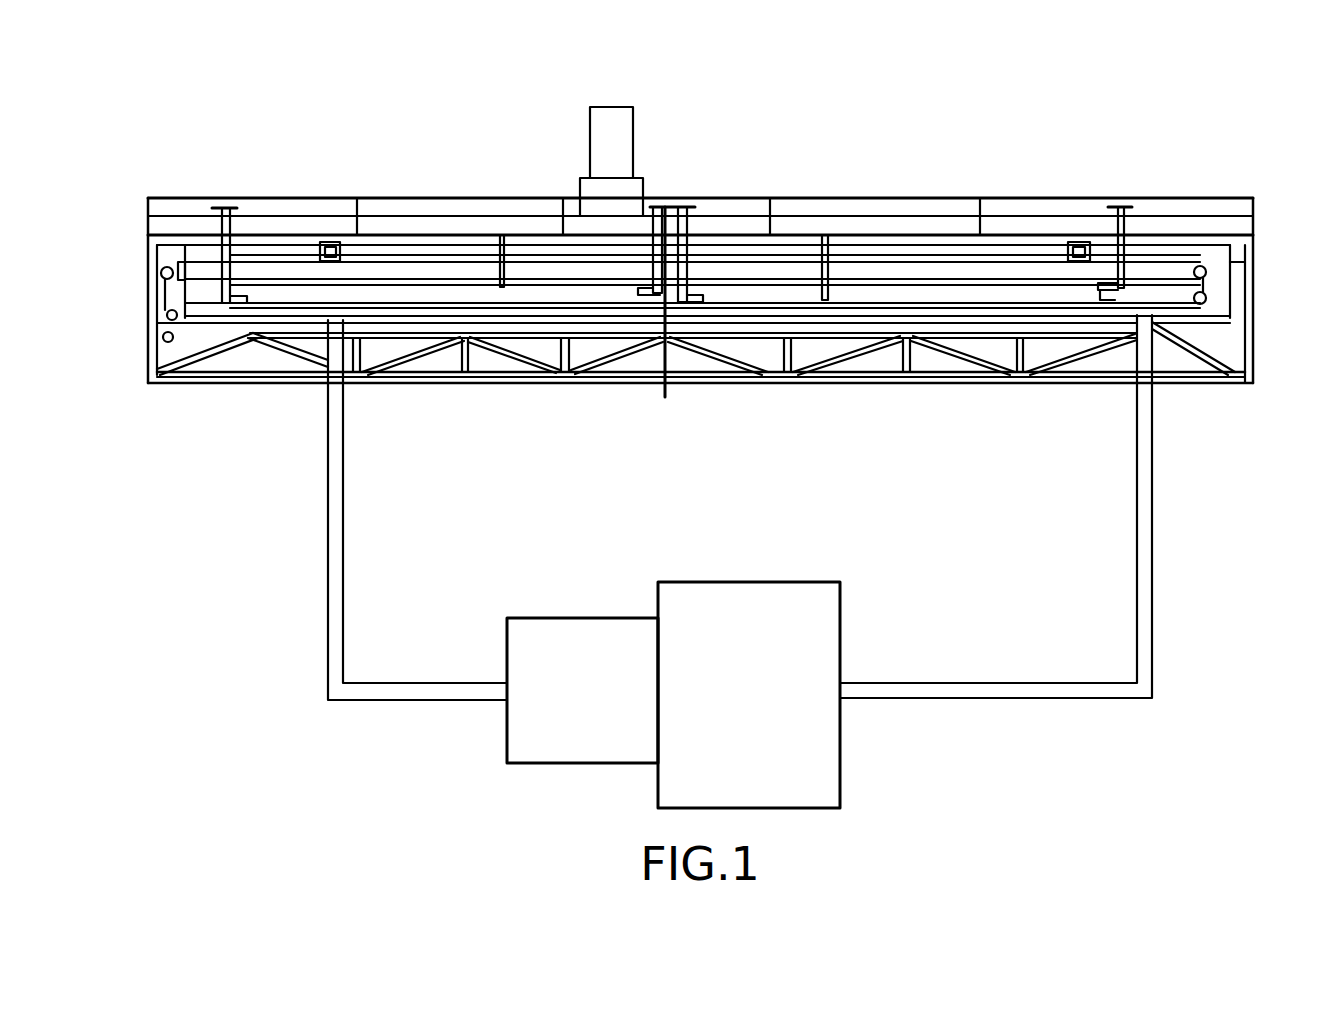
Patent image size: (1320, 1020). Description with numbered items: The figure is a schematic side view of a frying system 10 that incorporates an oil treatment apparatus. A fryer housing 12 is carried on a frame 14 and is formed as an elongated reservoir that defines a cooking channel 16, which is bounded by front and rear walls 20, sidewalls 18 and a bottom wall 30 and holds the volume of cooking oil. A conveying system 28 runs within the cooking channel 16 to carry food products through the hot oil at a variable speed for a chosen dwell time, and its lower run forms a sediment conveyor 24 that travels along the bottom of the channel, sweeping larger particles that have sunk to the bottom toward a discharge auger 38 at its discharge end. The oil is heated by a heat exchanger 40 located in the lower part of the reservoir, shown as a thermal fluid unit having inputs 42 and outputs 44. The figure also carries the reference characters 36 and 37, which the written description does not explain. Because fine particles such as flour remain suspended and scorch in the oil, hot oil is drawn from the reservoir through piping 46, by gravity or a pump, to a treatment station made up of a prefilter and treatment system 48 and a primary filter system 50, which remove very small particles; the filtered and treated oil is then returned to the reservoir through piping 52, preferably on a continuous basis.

The frying system 10 is at (385, 183).
The fryer housing 12 is at (900, 322).
The frame 14 is at (386, 381).
The cooking channel 16 is at (176, 297).
The sidewalls 18 is at (1212, 250).
The front and rear walls 20 is at (155, 258).
The sediment conveyor 24 is at (630, 302).
The conveying system 28 is at (412, 246).
The bottom wall 30 is at (225, 322).
The top plate 36 is at (935, 196).
The column 37 is at (590, 128).
The discharge auger 38 is at (170, 345).
The heat exchanger 40 is at (445, 296).
The inputs 42 is at (207, 208).
The outputs 44 is at (641, 222).
The piping 46 is at (330, 580).
The prefilter and treatment system 48 is at (507, 738).
The primary filter system 50 is at (840, 762).
The piping 52 is at (1048, 700).